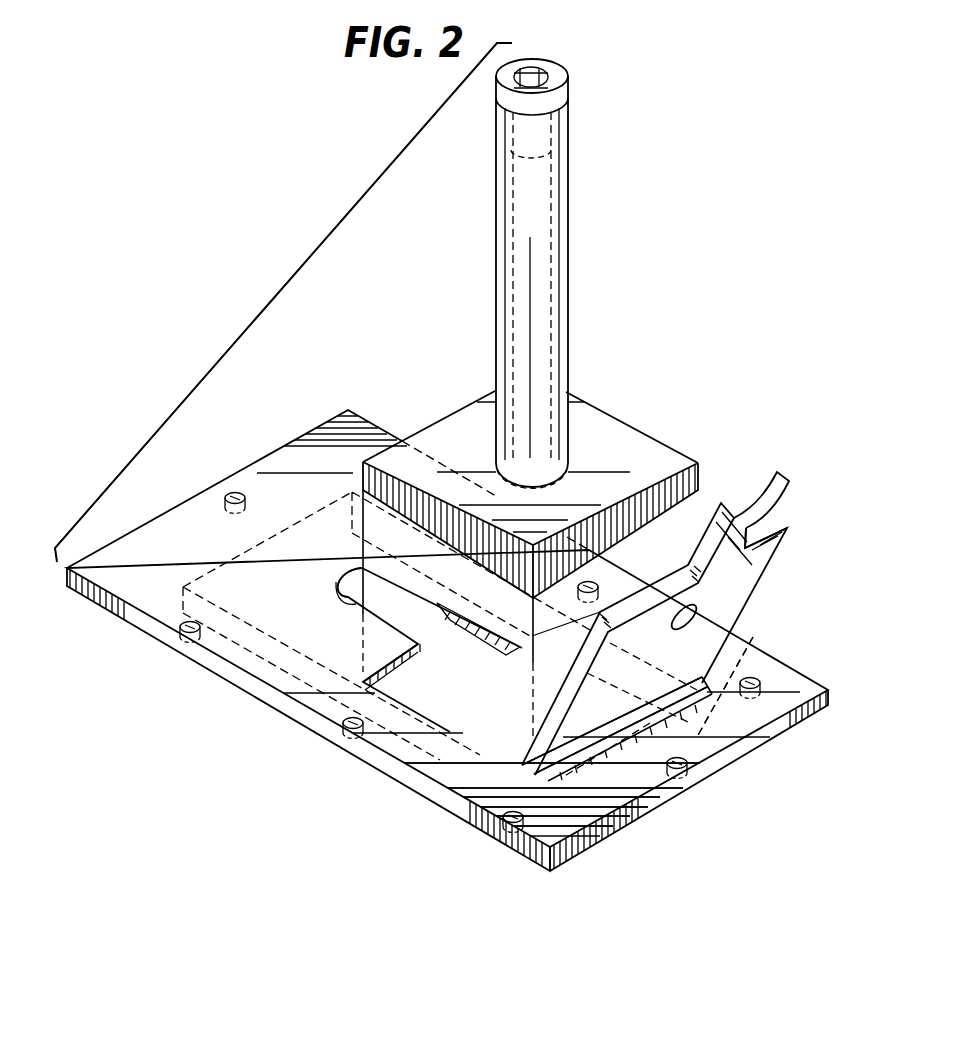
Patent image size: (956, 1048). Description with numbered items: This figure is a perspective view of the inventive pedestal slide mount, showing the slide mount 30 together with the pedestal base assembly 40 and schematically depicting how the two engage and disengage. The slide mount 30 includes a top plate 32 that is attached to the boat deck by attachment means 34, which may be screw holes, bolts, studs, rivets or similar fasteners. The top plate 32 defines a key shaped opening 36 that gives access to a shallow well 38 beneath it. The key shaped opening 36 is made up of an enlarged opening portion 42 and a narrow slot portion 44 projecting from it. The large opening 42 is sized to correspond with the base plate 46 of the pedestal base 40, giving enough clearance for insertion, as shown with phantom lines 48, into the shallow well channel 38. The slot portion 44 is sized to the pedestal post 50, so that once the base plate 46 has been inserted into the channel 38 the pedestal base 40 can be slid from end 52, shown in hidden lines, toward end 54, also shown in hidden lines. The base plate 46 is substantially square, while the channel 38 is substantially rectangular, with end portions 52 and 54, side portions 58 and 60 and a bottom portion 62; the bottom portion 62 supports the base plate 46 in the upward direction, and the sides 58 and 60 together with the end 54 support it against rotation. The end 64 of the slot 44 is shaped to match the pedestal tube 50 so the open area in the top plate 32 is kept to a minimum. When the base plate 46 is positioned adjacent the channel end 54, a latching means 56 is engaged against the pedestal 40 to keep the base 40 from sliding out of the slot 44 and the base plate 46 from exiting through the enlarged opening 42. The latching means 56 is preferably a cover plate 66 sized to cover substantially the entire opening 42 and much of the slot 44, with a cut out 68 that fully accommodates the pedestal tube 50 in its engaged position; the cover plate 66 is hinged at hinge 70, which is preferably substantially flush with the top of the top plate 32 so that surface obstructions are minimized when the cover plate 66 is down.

The slide mount 30 is at (276, 418).
The top plate 32 is at (138, 625).
The attachment means 34 is at (235, 490).
The key shaped opening 36 is at (392, 674).
The shallow well 38 is at (472, 730).
The pedestal base assembly 40 is at (438, 352).
The enlarged opening portion 42 is at (428, 728).
The narrow slot portion 44 is at (380, 621).
The base plate 46 is at (665, 447).
The phantom lines 48 is at (530, 652).
The pedestal post 50 is at (568, 364).
The end of channel 52 is at (627, 793).
The end of channel 54 is at (220, 565).
The latching means 56 is at (765, 517).
The side portion of channel 58 is at (447, 810).
The side portion of channel 60 is at (733, 655).
The bottom portion of channel 62 is at (570, 857).
The end of slot 64 is at (340, 580).
The cover plate 66 is at (760, 576).
The cut out 68 is at (770, 470).
The hinge 70 is at (500, 807).